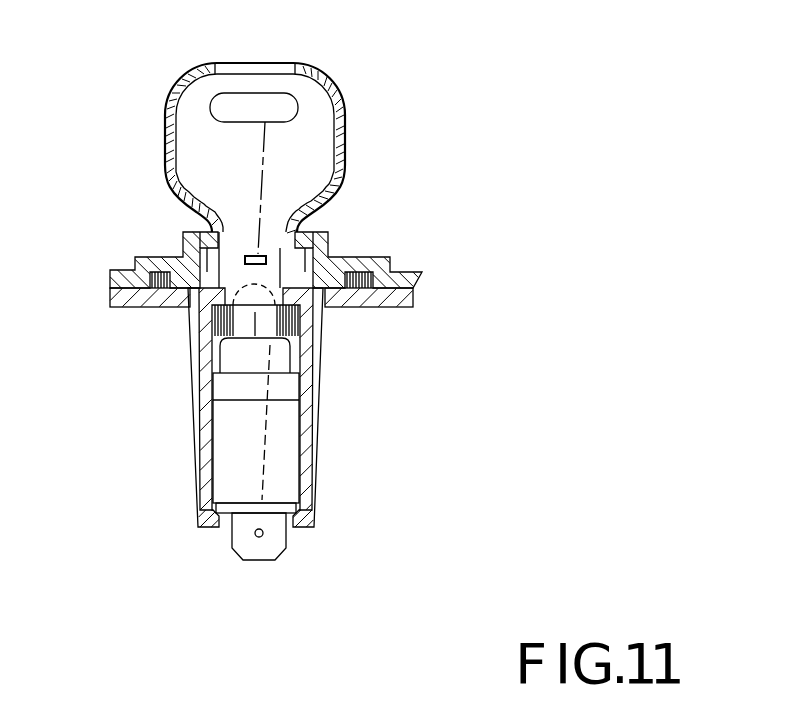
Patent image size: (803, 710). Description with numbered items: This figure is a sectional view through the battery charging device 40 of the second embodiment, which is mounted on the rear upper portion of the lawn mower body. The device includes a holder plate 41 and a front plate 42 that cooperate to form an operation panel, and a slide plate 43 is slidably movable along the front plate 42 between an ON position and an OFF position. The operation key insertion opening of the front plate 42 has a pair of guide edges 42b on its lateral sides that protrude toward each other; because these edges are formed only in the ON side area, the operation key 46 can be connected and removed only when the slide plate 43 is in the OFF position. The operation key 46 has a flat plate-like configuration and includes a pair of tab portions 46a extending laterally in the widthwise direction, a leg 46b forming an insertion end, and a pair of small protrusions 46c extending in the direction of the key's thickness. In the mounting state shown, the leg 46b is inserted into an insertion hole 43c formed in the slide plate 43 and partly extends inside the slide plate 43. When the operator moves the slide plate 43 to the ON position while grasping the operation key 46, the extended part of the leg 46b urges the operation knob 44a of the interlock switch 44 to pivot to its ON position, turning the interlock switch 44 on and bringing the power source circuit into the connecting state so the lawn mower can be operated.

The battery charging device 40 is at (415, 220).
The holder plate 41 is at (392, 308).
The front plate 42 is at (390, 255).
The guide edges 42b is at (187, 235).
The slide plate 43 is at (188, 310).
The insertion hole 43c is at (278, 268).
The interlock switch 44 is at (225, 445).
The operation knob 44a is at (318, 325).
The operation key 46 is at (327, 132).
The tab portions 46a is at (183, 255).
The leg 46b is at (322, 316).
The small protrusions 46c is at (255, 256).